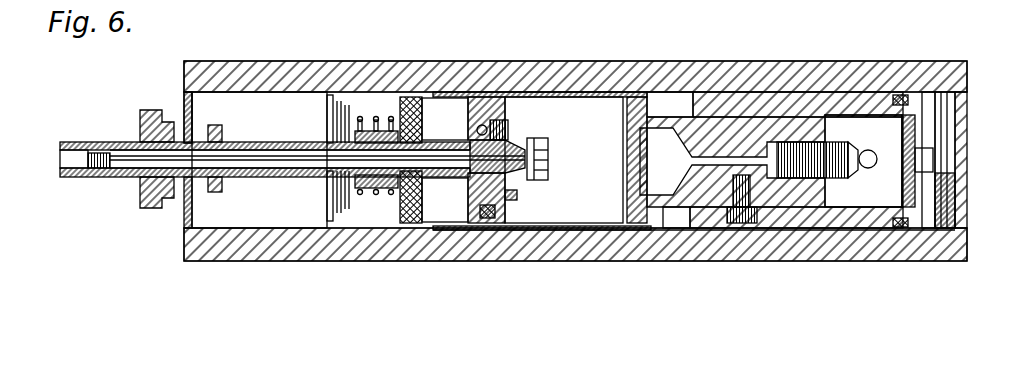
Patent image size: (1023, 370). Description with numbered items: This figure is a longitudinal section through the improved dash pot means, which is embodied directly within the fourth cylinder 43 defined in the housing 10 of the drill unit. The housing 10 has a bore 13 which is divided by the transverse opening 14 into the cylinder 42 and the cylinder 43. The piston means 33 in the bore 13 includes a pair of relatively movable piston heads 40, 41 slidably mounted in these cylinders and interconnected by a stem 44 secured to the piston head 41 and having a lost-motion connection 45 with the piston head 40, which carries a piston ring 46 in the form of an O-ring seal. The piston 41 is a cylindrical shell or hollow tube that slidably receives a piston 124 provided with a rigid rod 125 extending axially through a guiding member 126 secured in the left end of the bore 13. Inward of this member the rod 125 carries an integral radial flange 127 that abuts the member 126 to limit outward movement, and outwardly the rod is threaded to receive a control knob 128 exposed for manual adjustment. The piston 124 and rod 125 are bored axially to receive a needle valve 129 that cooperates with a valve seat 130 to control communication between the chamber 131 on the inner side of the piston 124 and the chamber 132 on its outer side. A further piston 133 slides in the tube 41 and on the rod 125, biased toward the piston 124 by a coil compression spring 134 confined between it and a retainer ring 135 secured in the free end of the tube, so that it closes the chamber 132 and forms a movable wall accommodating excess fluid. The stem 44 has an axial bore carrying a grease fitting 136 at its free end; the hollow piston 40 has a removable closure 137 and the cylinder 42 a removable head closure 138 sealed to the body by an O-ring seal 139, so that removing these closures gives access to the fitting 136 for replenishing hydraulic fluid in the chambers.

The housing 10 is at (822, 60).
The bore 13 is at (720, 92).
The transverse opening 14 is at (657, 100).
The piston means 33 is at (552, 232).
The piston head 40 is at (835, 226).
The piston head 41 is at (385, 228).
The cylinder 42 is at (930, 202).
The cylinder 43 is at (252, 217).
The stem 44 is at (670, 215).
The lost-motion connection 45 is at (760, 218).
The piston ring 46 is at (905, 95).
The piston 124 is at (505, 208).
The rod 125 is at (282, 177).
The guiding member 126 is at (193, 108).
The radial flange 127 is at (222, 128).
The control knob 128 is at (147, 209).
The needle valve 129 is at (462, 156).
The valve seat 130 is at (512, 131).
The chamber 131 is at (598, 160).
The chamber 132 is at (445, 119).
The piston 133 is at (422, 199).
The coil compression spring 134 is at (355, 225).
The retainer ring 135 is at (330, 206).
The grease fitting 136 is at (832, 180).
The removable closure 137 is at (905, 139).
The head closure 138 is at (966, 135).
The O-ring seal 139 is at (955, 110).